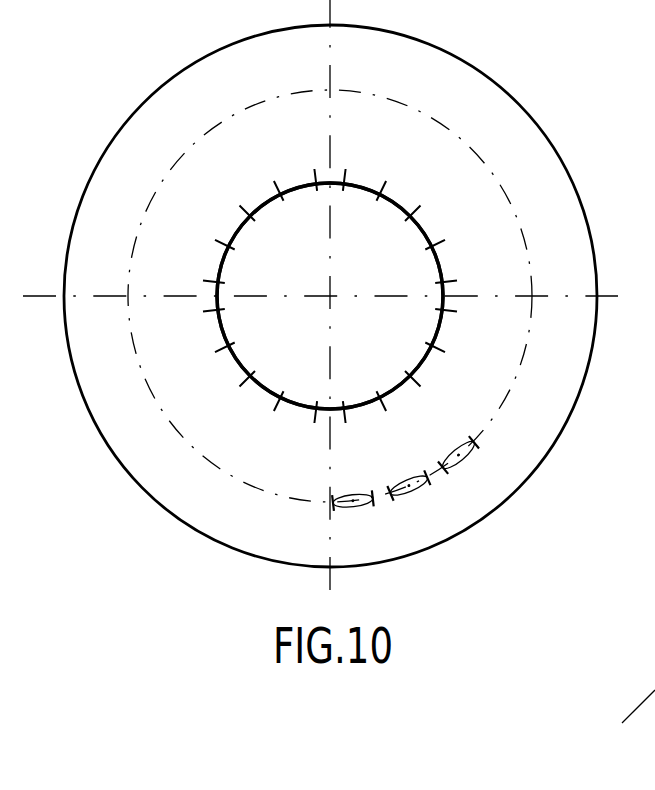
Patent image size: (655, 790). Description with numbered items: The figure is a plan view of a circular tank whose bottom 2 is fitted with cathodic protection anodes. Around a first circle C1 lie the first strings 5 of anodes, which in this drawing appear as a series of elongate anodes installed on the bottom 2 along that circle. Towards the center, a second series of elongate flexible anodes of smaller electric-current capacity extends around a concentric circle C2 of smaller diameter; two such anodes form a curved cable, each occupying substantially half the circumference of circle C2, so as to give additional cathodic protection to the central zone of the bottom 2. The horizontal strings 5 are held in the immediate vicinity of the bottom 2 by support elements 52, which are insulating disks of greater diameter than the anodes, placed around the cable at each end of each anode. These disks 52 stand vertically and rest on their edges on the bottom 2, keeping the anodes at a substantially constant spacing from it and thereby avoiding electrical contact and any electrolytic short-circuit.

The bottom of the tank 2 is at (453, 72).
The first circle C1 is at (514, 230).
The concentric circle of smaller diameter C2 is at (262, 388).
The first strings 5 is at (236, 350).
The support elements 52 is at (357, 174).